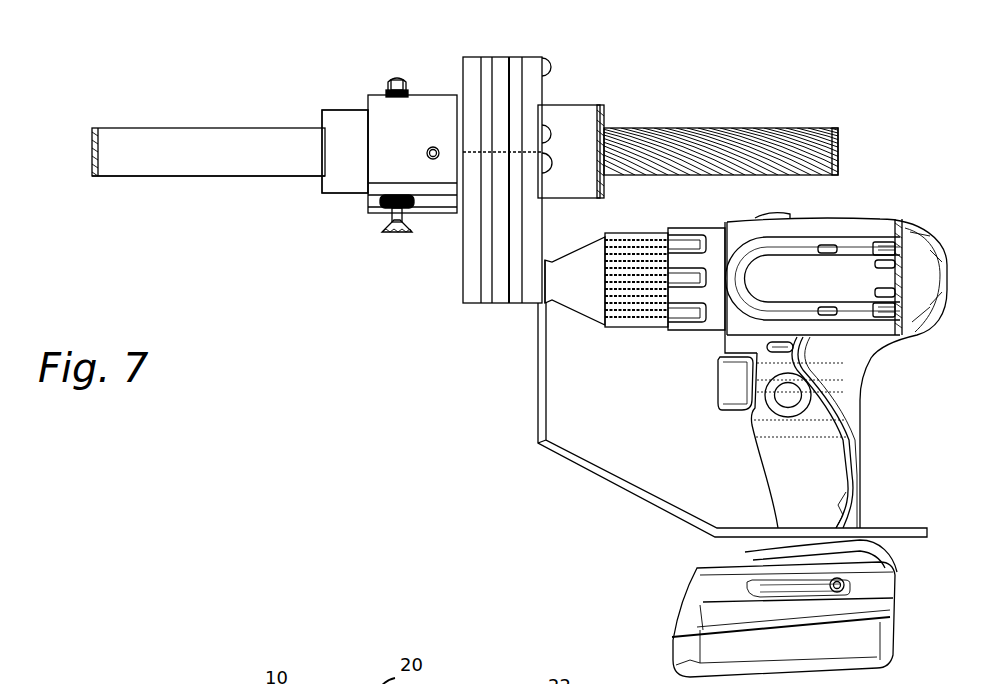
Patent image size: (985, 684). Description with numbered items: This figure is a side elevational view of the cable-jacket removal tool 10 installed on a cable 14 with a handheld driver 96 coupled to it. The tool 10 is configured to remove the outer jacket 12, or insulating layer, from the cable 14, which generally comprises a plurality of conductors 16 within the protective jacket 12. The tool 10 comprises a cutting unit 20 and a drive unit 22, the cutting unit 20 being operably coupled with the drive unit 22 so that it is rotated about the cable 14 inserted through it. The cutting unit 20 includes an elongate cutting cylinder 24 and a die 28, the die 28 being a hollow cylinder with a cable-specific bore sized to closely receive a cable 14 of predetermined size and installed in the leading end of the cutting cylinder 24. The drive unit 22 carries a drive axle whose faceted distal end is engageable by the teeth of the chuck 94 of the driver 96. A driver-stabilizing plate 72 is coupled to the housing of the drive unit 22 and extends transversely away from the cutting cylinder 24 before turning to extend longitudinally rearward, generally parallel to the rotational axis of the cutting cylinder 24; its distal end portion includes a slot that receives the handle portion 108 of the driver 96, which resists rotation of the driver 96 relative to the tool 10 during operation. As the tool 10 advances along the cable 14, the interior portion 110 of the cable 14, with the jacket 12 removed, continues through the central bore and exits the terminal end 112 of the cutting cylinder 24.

The cable-jacket removal tool 10 is at (306, 92).
The outer jacket 12 is at (275, 173).
The cable 14 is at (183, 167).
The conductors 16 is at (775, 130).
The cutting unit 20 is at (434, 228).
The drive unit 22 is at (492, 305).
The cutting cylinder 24 is at (568, 104).
The die 28 is at (426, 97).
The driver-stabilizing plate 72 is at (667, 512).
The chuck 94 is at (630, 324).
The driver 96 is at (863, 470).
The handle portion 108 is at (857, 438).
The interior portion 110 is at (838, 156).
The terminal end 112 is at (608, 116).